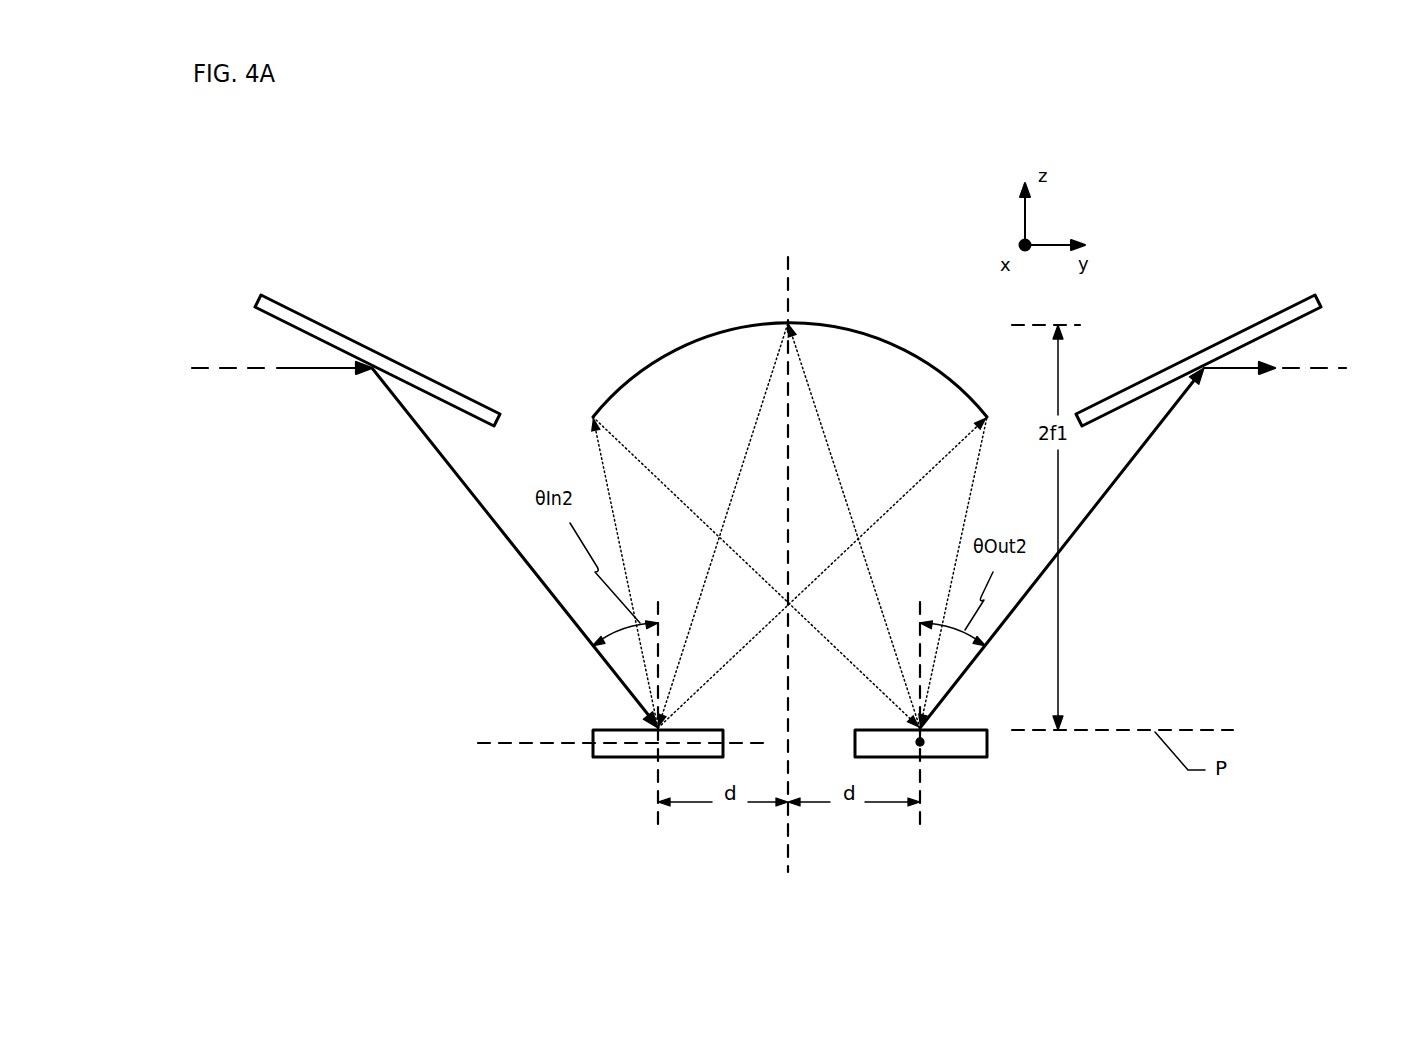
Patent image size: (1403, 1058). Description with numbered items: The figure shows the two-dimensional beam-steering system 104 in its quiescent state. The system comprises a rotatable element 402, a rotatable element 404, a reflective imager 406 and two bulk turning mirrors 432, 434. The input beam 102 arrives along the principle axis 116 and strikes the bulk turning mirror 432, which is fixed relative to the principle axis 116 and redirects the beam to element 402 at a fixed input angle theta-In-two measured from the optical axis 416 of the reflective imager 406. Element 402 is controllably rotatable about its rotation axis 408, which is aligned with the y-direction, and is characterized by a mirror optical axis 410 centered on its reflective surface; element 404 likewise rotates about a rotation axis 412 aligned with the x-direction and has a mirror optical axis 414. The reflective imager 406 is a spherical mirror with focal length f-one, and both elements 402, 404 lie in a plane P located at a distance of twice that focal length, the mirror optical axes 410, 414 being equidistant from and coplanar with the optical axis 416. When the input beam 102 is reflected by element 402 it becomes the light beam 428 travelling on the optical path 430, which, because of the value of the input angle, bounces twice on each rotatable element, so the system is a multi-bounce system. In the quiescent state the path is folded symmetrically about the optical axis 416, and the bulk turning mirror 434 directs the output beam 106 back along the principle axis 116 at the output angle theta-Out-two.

The input beam 102 is at (610, 670).
The two-dimensional beam-steering system 104 is at (413, 185).
The output beam 106 is at (1145, 446).
The principle axis 116 is at (230, 371).
The element 402 is at (618, 758).
The element 404 is at (988, 744).
The reflective imager 406 is at (883, 340).
The rotation axis 408 is at (553, 745).
The mirror optical axis 410 is at (657, 800).
The rotation axis 412 is at (923, 745).
The mirror optical axis 414 is at (923, 800).
The optical axis 416 is at (786, 287).
The light beam 428 is at (779, 486).
The optical path 430 is at (692, 383).
The bulk turning mirror 432 is at (310, 316).
The bulk turning mirror 434 is at (1270, 316).